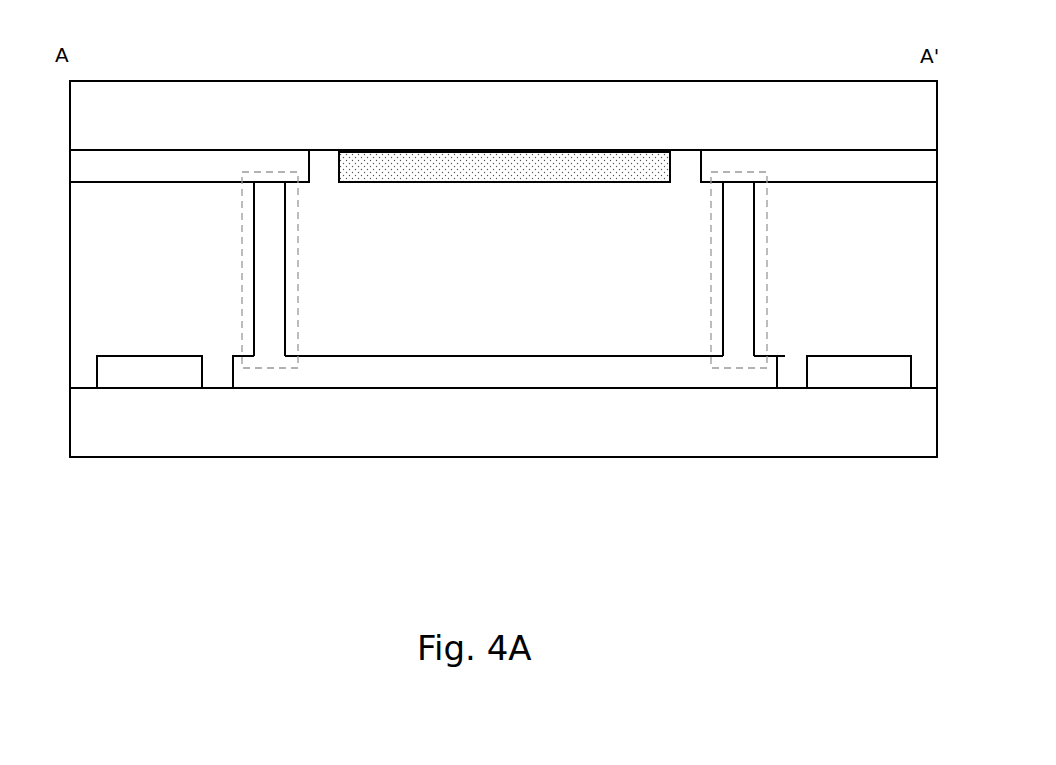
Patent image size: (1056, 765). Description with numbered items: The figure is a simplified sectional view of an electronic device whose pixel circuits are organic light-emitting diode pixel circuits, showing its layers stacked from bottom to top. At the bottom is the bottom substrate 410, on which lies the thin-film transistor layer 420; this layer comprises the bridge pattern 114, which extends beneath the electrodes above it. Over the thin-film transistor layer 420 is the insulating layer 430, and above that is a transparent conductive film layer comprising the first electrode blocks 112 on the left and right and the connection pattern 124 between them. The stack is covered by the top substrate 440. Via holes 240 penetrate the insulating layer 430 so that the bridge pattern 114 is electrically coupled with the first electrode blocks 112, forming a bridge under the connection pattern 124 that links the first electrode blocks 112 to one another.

The first electrode blocks 112 is at (185, 167).
The connection pattern 124 is at (507, 163).
The bridge pattern 114 is at (508, 373).
The via holes 240 is at (268, 367).
The bottom substrate 410 is at (930, 418).
The thin-film transistor layer 420 is at (903, 370).
The insulating layer 430 is at (925, 266).
The top substrate 440 is at (930, 116).